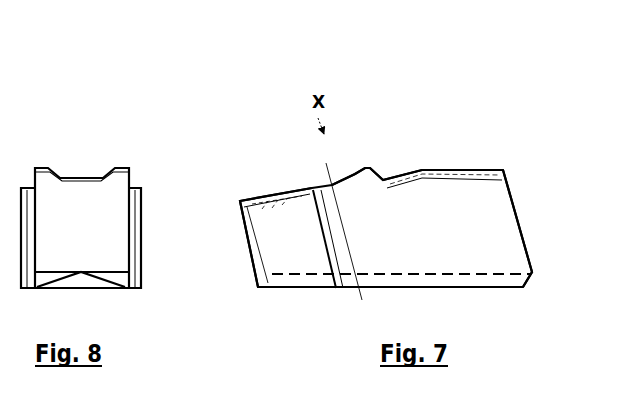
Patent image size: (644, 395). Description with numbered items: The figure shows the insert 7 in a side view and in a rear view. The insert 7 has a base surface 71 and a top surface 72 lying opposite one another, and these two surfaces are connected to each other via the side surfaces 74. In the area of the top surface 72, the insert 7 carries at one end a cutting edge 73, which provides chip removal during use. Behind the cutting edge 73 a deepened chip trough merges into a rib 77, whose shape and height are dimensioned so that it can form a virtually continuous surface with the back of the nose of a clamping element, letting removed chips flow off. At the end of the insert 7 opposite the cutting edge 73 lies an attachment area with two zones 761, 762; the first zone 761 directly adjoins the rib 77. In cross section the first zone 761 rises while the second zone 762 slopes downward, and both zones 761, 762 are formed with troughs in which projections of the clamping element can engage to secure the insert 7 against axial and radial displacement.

The insert 7 is at (432, 247).
The base surface 71 is at (483, 288).
The top surface 72 is at (483, 168).
The cutting edge 73 is at (237, 196).
The side surfaces 74 is at (245, 228).
The first zone 761 is at (407, 166).
The second zone 762 is at (461, 166).
The rib 77 is at (365, 167).